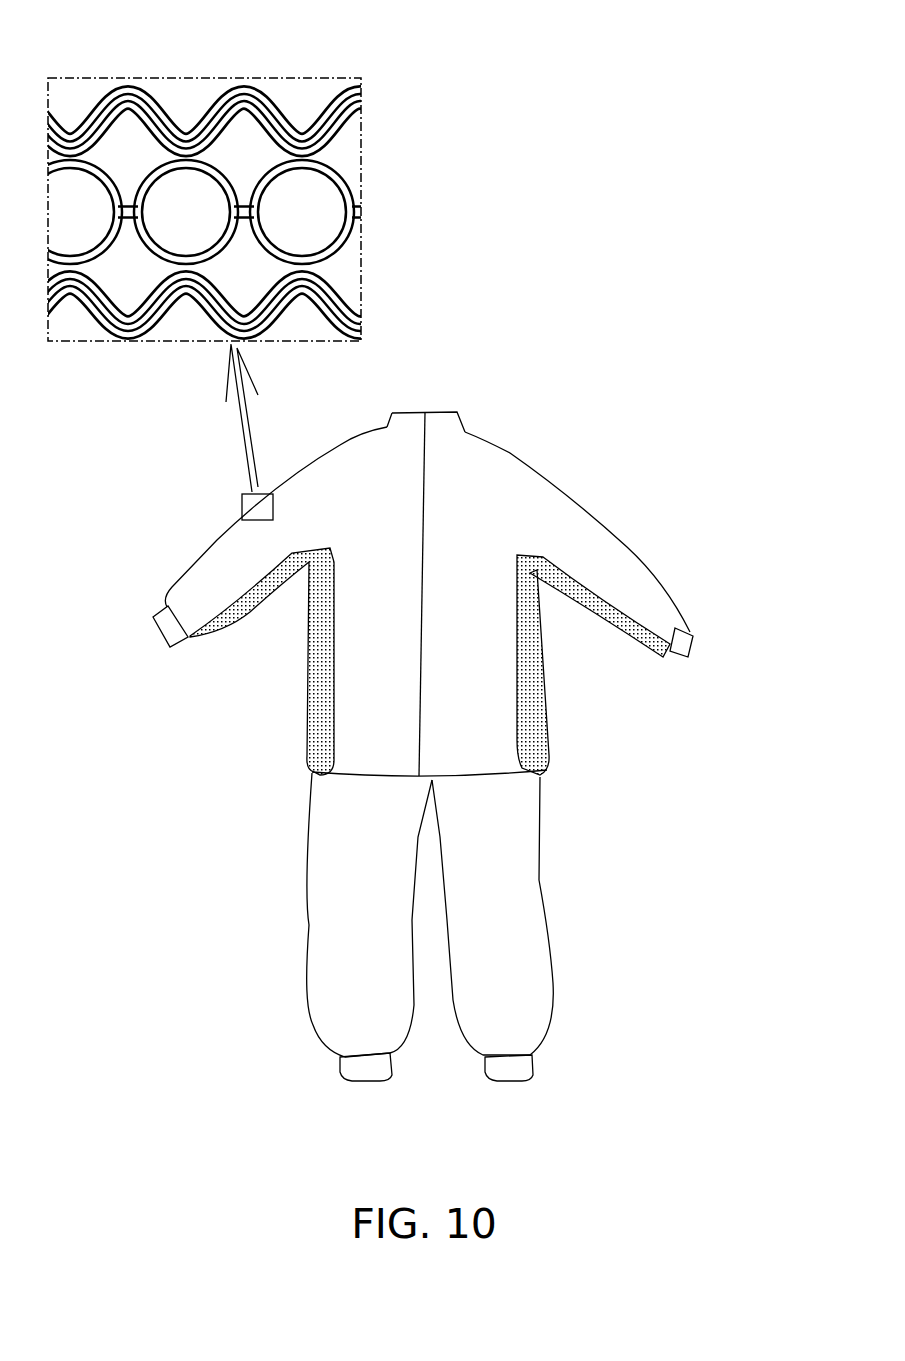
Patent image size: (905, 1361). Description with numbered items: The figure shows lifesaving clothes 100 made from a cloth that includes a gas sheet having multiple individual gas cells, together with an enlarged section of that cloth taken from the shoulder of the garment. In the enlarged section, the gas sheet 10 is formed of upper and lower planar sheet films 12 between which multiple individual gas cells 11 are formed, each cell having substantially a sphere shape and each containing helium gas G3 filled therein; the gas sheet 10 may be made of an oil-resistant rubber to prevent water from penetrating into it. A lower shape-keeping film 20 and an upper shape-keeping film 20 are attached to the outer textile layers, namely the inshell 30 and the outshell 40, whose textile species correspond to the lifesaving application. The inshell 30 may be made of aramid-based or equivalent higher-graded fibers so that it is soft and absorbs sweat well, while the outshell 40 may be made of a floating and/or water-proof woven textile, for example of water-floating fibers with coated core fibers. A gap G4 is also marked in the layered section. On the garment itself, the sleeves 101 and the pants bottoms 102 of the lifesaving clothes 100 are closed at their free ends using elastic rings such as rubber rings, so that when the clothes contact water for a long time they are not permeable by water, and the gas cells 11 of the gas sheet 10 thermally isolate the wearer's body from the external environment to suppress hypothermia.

The gas sheet 10 is at (263, 96).
The individual gas cell 11 is at (215, 163).
The planar sheet film 12 is at (152, 85).
The shape-keeping film 20 is at (105, 90).
The inshell 30 is at (342, 80).
The outshell 40 is at (213, 334).
The helium gas G3 is at (330, 193).
The air gap between layers G4 is at (128, 297).
The lifesaving clothes 100 is at (517, 457).
The sleeve 101 is at (167, 648).
The pants bottom 102 is at (358, 1082).